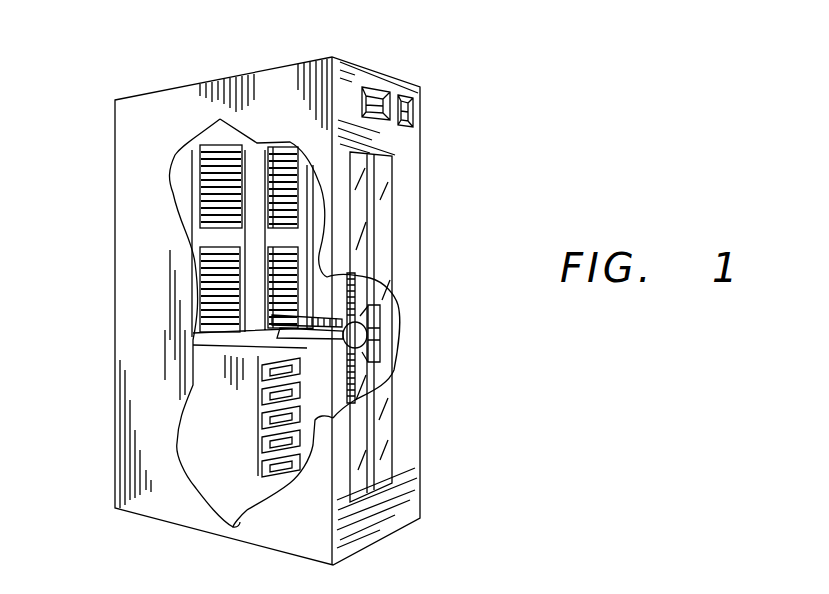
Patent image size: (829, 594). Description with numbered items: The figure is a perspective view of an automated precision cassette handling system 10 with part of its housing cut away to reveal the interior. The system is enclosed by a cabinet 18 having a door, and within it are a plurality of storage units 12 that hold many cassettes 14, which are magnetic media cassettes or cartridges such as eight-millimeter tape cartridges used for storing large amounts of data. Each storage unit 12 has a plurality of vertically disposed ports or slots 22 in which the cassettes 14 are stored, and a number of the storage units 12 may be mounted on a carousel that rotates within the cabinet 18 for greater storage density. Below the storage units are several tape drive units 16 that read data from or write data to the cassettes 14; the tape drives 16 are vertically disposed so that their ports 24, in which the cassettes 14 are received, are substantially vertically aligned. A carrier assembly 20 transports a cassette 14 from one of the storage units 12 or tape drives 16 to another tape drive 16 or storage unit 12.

The automated precision cassette handling system 10 is at (440, 262).
The storage unit 12 is at (216, 185).
The cassette 14 is at (214, 218).
The tape drive unit 16 is at (266, 372).
The cabinet 18 is at (168, 117).
The carrier assembly 20 is at (321, 342).
The slot 22 is at (292, 187).
The port 24 is at (283, 470).